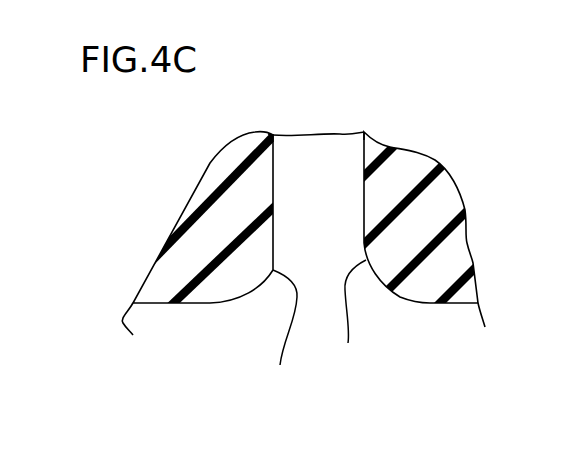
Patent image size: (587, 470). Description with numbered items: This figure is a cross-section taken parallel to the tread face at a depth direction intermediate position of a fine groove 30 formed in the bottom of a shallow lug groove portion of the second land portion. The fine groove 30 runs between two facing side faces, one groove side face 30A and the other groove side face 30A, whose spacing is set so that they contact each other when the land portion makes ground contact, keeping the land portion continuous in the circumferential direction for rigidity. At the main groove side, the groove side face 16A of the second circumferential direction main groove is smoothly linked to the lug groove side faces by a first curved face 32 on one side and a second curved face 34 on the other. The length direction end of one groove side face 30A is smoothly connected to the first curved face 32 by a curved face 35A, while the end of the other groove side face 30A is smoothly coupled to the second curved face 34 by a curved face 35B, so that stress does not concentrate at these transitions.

The groove side face 16A is at (157, 305).
The fine groove 30 is at (333, 160).
The groove side face 30A is at (277, 157).
The first curved face 32 is at (395, 298).
The second curved face 34 is at (243, 298).
The curved face 35A is at (346, 317).
The curved face 35B is at (286, 332).